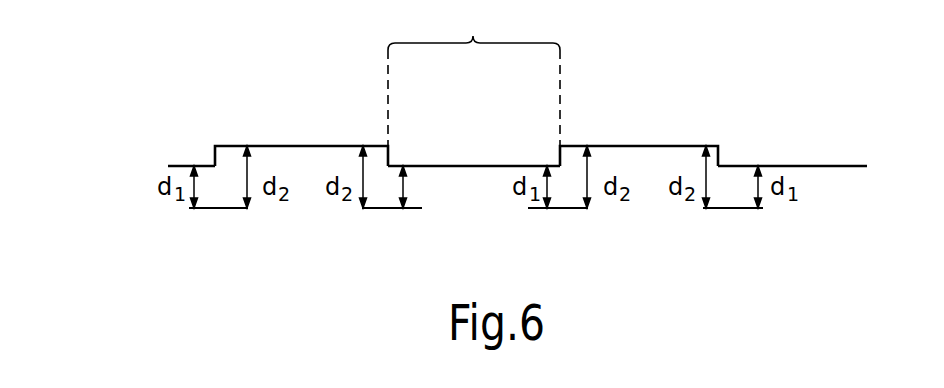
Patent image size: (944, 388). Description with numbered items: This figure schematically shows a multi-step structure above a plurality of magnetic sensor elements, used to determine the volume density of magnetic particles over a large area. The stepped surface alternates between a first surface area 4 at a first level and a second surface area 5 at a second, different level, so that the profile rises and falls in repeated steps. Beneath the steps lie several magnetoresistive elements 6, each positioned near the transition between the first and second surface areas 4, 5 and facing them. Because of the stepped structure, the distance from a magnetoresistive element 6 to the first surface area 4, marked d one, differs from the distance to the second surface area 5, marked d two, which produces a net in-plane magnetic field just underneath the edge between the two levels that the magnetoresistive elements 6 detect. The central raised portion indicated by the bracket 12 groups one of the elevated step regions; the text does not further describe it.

The first surface area 4 is at (185, 165).
The second surface area 5 is at (327, 144).
The magnetoresistive element 6 is at (216, 211).
The central raised portion 12 is at (474, 77).